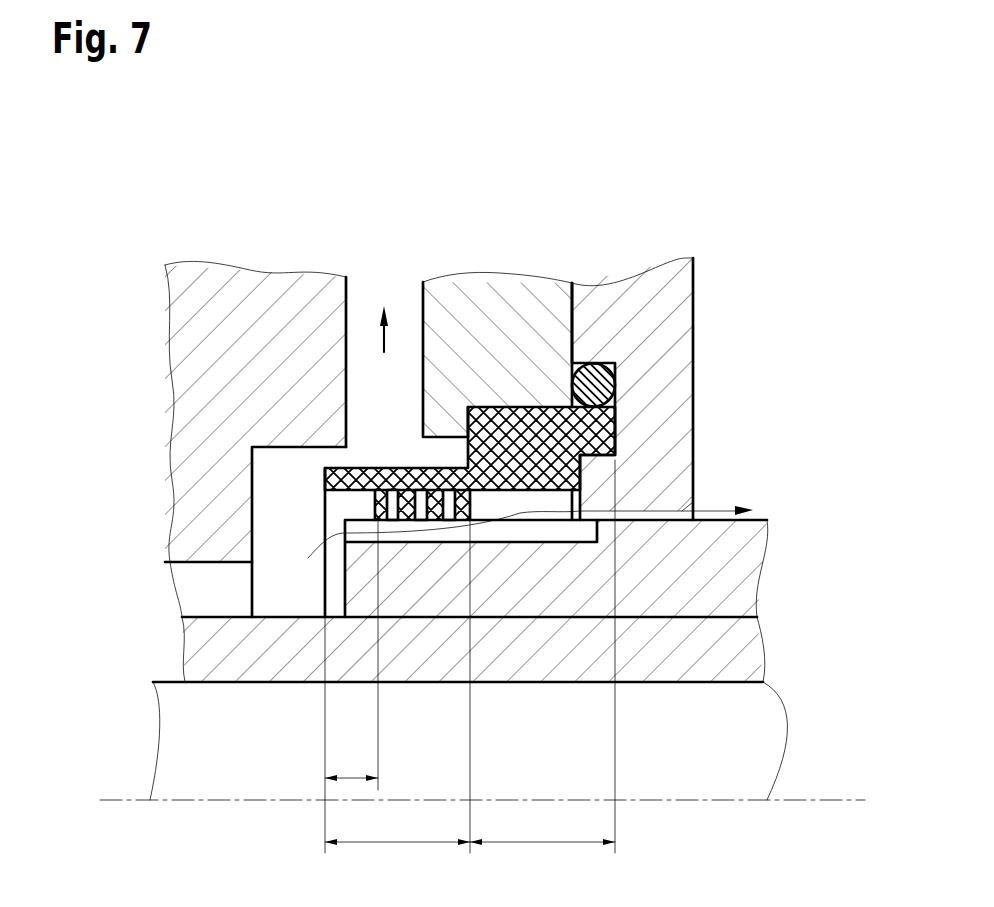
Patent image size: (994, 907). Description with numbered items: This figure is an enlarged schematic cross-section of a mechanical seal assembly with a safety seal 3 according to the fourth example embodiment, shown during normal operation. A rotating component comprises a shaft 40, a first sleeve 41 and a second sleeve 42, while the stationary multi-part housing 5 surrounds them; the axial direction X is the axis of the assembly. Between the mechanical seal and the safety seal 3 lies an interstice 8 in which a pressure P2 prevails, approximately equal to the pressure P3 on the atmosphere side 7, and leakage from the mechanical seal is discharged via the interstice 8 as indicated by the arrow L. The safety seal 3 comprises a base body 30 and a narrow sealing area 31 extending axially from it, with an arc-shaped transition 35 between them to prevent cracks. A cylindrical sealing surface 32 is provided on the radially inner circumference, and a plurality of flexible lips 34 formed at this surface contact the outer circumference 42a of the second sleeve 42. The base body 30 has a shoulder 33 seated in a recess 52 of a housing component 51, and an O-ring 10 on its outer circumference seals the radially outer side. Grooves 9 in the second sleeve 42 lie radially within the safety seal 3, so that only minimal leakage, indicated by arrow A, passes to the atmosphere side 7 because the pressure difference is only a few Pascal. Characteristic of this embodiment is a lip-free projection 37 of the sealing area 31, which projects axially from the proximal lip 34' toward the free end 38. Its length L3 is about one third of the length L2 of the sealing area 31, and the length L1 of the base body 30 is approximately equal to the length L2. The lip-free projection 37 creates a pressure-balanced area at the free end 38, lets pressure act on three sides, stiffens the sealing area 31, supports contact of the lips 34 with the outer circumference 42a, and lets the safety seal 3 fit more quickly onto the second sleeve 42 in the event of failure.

The safety seal 3 is at (503, 394).
The housing 5 is at (271, 327).
The atmosphere side 7 is at (800, 403).
The interstice 8 is at (295, 510).
The grooves 9 is at (523, 538).
The O-ring 10 is at (598, 383).
The base body 30 is at (605, 413).
The sealing area 31 is at (363, 467).
The sealing surface 32 is at (403, 520).
The shoulder 33 is at (597, 450).
The lips 34 is at (442, 613).
The proximal lip 34' is at (253, 542).
The arc-shaped transition 35 is at (468, 466).
The lip-free projection 37 is at (343, 467).
The free end 38 is at (317, 489).
The shaft 40 is at (760, 723).
The first sleeve 41 is at (733, 650).
The second sleeve 42 is at (730, 568).
The outer circumference of the second sleeve 42a is at (533, 510).
The housing component 51 is at (657, 307).
The recess 52 is at (605, 442).
The arrow L is at (378, 342).
The arrow A is at (713, 511).
The pressure P2 is at (385, 420).
The pressure P3 is at (787, 480).
The axial direction X- X is at (481, 800).
The length L1 is at (542, 656).
The length L2 is at (397, 686).
The length L3 is at (351, 686).